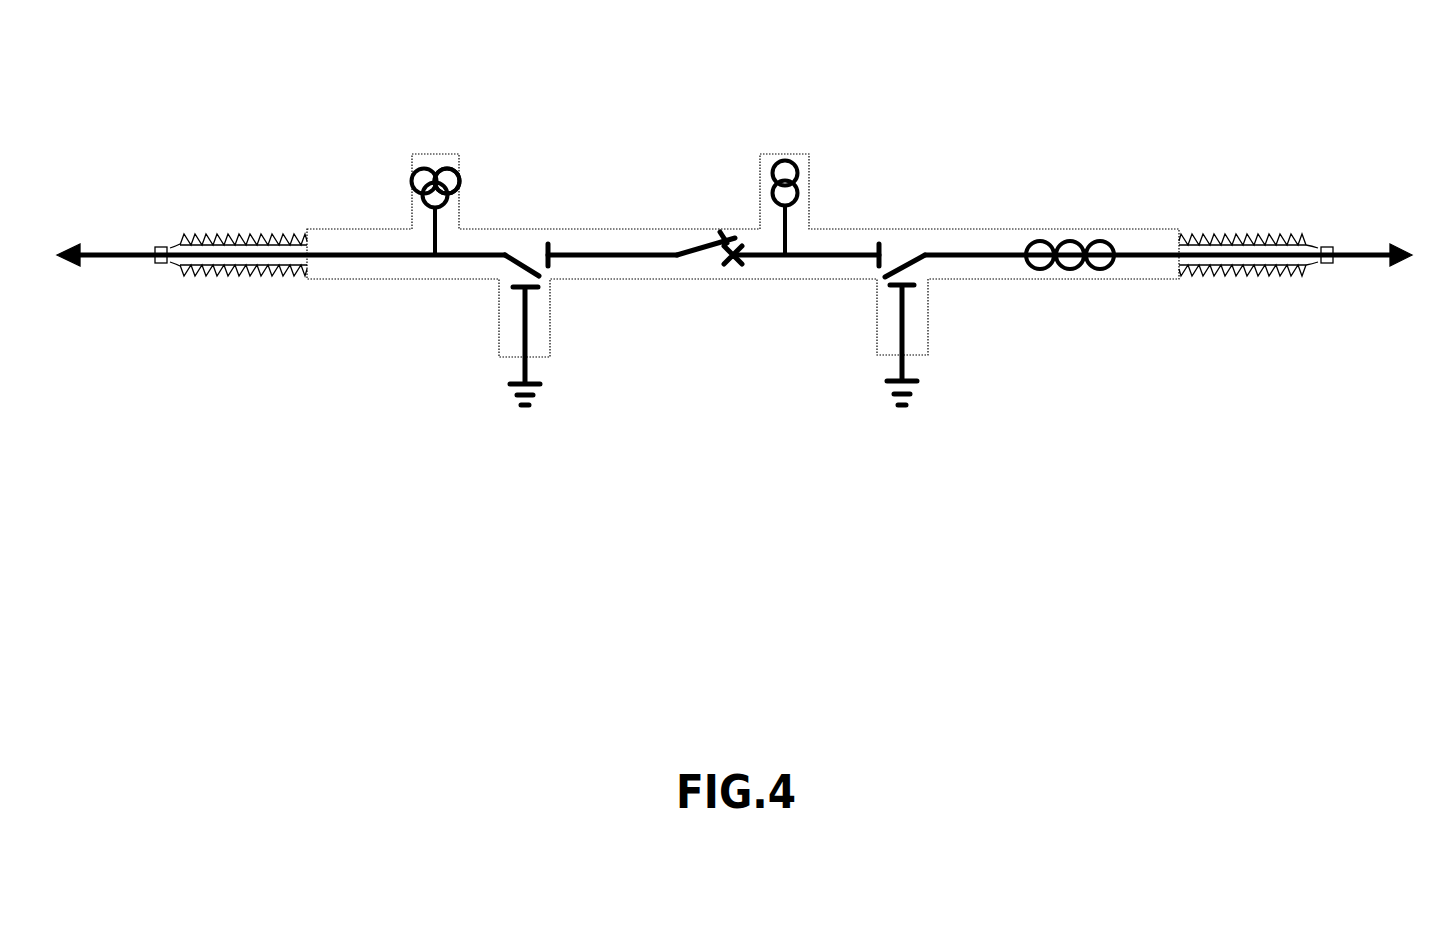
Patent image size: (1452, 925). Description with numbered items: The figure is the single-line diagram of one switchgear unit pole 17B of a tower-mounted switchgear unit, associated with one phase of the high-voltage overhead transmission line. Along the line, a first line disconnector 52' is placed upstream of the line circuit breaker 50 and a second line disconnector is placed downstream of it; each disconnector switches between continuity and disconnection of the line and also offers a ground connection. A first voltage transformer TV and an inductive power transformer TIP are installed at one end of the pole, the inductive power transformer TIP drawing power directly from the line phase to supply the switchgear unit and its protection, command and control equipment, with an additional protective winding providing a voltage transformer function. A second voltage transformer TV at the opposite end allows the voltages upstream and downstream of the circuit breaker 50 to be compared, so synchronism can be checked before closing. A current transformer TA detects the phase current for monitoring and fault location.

The switchgear unit pole 17B is at (1137, 280).
The first line disconnector 52' is at (575, 197).
The line circuit breaker 50 is at (703, 257).
The voltage transformer TV is at (435, 170).
The inductive power transformer TIP is at (460, 180).
The current transformer TA is at (1077, 243).